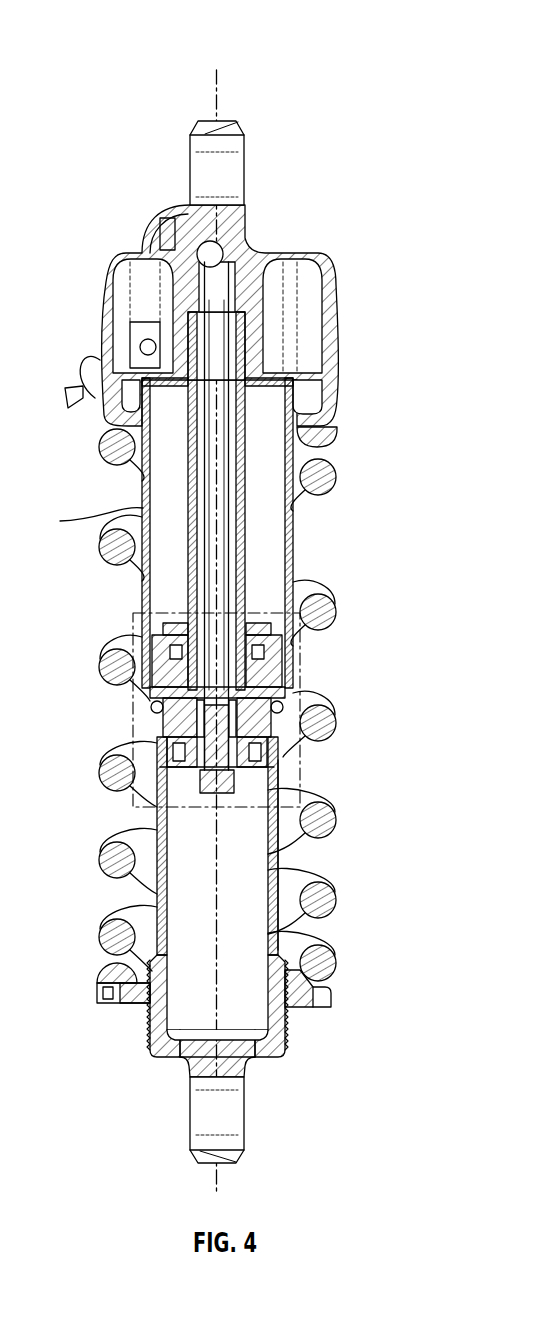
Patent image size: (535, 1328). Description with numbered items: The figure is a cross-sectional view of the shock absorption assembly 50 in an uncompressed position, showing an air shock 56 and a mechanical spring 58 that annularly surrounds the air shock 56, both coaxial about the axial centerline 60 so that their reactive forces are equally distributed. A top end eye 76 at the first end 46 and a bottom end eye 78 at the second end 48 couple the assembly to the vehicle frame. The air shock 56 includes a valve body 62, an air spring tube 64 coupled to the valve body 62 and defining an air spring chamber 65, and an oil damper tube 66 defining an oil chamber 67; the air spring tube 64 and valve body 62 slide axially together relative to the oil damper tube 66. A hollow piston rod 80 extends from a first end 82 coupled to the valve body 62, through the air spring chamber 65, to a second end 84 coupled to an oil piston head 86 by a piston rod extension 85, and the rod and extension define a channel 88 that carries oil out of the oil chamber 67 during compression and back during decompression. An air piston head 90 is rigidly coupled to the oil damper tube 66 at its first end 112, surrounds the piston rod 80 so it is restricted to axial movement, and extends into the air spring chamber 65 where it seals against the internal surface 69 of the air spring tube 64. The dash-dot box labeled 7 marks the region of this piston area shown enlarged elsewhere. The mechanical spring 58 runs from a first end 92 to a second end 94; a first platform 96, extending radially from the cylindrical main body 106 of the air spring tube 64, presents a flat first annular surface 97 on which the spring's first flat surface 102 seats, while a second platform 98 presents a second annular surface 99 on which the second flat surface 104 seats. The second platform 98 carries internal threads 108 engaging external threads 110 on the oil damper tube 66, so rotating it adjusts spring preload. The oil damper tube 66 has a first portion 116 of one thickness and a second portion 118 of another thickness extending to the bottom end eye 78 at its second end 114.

The first end 46 is at (277, 128).
The second end 48 is at (163, 1176).
The shock absorption assembly 50 is at (120, 60).
The air shock 56 is at (356, 355).
The mechanical spring 58 is at (333, 605).
The axial centerline 60 is at (213, 87).
The valve body 62 is at (328, 256).
The air spring tube 64 is at (293, 528).
The air spring chamber 65 is at (161, 521).
The oil damper tube 66 is at (157, 832).
The oil chamber 67 is at (177, 906).
The internal surface 69 is at (154, 572).
The detail region of FIG. 7 is at (300, 626).
The top end eye 76 is at (189, 164).
The bottom end eye 78 is at (243, 1127).
The piston rod 80 is at (193, 455).
The first end 82 is at (193, 337).
The second end 84 is at (188, 702).
The piston rod extension 85 is at (172, 747).
The oil piston head 86 is at (264, 748).
The channel 88 is at (222, 526).
The air piston head 90 is at (296, 690).
The first end 92 is at (338, 440).
The second end 94 is at (117, 970).
The first platform 96 is at (118, 410).
The first annular surface 97 is at (116, 436).
The second platform 98 is at (305, 999).
The second annular surface 99 is at (321, 973).
The first flat surface 102 is at (327, 419).
The second flat surface 104 is at (108, 995).
The cylindrical main body 106 is at (85, 514).
The internal threads 108 is at (156, 986).
The external threads 110 is at (290, 1000).
The first end 112 is at (266, 698).
The second end 114 is at (149, 1054).
The first portion 116 is at (273, 848).
The second portion 118 is at (148, 1020).